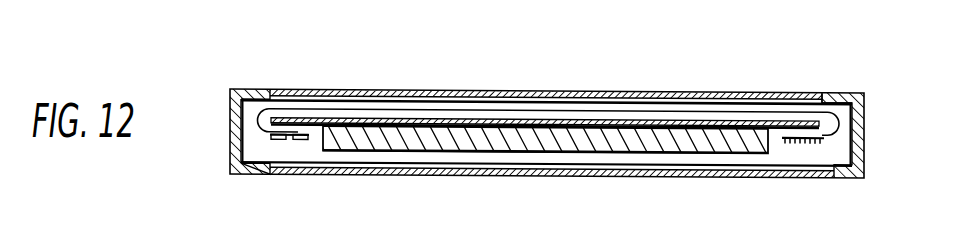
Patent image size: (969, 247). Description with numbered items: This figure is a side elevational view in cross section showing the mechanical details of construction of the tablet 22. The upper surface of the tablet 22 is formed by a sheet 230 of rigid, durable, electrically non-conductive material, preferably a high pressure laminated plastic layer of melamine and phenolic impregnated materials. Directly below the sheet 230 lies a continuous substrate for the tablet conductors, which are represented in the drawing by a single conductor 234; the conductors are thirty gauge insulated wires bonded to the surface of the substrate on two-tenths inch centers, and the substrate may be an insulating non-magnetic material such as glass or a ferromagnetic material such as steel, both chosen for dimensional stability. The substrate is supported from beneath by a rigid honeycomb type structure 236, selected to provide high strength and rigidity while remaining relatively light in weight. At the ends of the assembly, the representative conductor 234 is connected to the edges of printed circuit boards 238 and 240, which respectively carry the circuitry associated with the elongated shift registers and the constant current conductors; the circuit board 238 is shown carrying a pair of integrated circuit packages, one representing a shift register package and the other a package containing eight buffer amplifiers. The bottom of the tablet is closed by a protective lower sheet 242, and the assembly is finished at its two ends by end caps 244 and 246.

The tablet 22 is at (547, 90).
The sheet 230 is at (546, 106).
The conductor 234 is at (511, 127).
The honeycomb type structure 236 is at (550, 166).
The printed circuit board 238 is at (289, 169).
The printed circuit board 240 is at (816, 171).
The protective lower sheet 242 is at (546, 184).
The end cap 244 is at (539, 125).
The end cap 246 is at (848, 75).